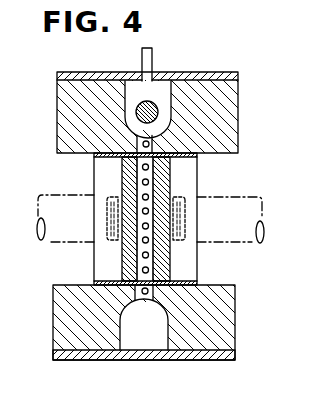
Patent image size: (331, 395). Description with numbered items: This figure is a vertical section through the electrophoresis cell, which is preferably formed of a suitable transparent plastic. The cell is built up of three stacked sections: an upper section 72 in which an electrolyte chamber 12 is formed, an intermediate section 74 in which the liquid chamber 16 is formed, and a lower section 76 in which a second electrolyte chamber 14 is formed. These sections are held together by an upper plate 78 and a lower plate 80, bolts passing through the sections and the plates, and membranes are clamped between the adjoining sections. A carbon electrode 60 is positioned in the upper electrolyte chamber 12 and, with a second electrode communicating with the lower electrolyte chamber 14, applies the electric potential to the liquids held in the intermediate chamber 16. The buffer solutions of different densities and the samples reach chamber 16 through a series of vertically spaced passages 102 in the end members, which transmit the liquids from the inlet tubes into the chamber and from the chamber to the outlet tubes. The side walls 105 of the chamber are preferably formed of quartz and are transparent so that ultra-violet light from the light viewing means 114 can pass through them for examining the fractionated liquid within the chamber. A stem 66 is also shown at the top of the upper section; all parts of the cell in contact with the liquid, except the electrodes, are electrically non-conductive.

The electrolyte chamber 12 is at (133, 88).
The electrolyte chamber 14 is at (150, 331).
The intermediate chamber 16 is at (139, 246).
The carbon electrode 60 is at (136, 109).
The stem 66 is at (151, 60).
The upper section 72 is at (233, 105).
The intermediate section 74 is at (116, 187).
The lower section 76 is at (62, 316).
The upper plate 78 is at (202, 78).
The lower plate 80 is at (87, 355).
The vertically spaced passages 102 is at (146, 268).
The side walls 105 is at (124, 174).
The light viewing means 114 is at (238, 197).